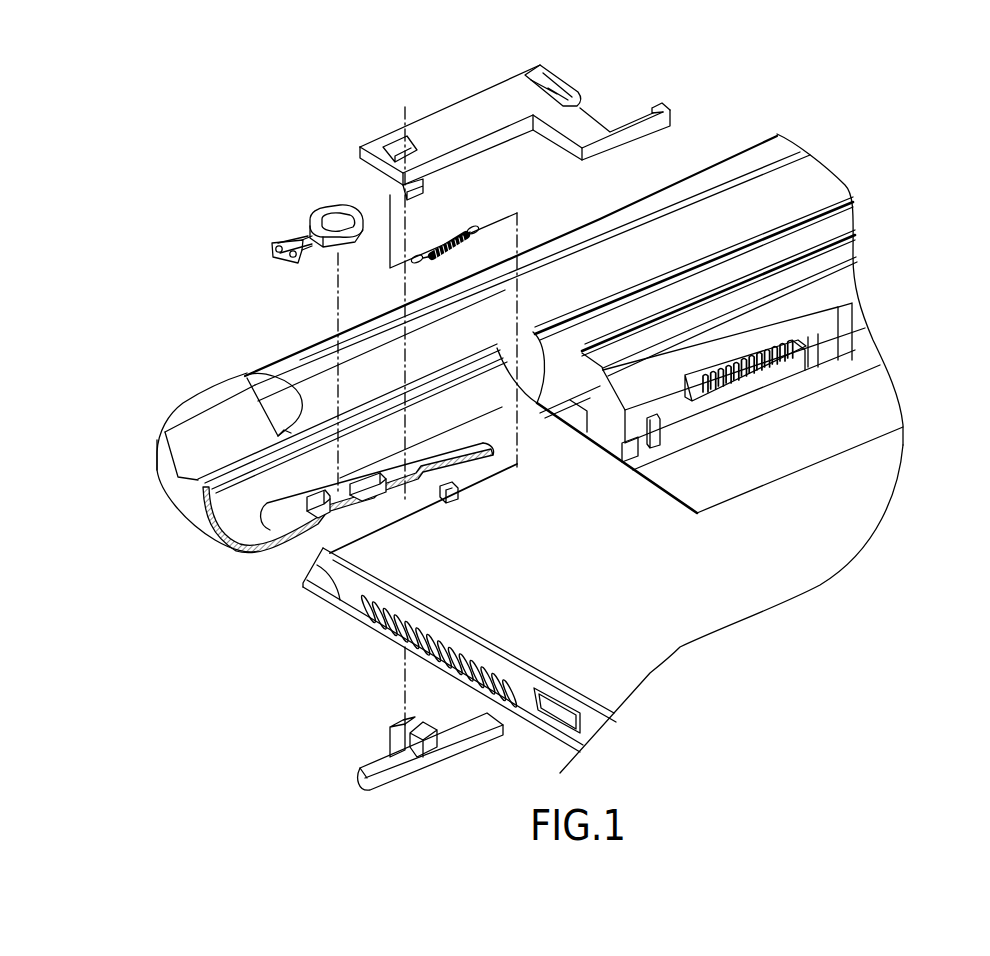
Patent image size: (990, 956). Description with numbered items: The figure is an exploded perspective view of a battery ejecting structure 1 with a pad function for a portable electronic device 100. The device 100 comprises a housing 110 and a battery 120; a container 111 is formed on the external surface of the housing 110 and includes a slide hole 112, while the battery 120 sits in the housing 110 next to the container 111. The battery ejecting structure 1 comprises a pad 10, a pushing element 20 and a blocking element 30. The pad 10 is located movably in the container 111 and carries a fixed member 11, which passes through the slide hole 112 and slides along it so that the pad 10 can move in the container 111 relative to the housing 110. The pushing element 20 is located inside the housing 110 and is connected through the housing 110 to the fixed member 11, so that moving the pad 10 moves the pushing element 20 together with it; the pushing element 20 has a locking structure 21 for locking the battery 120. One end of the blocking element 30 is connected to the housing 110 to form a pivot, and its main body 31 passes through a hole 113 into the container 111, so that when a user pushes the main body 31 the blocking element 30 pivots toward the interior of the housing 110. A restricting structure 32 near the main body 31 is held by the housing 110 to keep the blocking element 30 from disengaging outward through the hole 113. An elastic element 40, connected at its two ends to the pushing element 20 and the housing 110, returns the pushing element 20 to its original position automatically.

The battery ejecting structure 1 is at (298, 127).
The pad 10 is at (470, 751).
The fixed member 11 is at (397, 740).
The pushing element 20 is at (458, 116).
The locking structure 21 is at (556, 76).
The blocking element 30 is at (296, 234).
The main body 31 is at (330, 253).
The restricting structure 32 is at (336, 206).
The elastic element 40 is at (470, 228).
The portable electronic device 100 is at (880, 172).
The housing 110 is at (716, 607).
The container 111 is at (430, 478).
The slide hole 112 is at (386, 479).
The hole 113 is at (321, 496).
The battery 120 is at (857, 327).